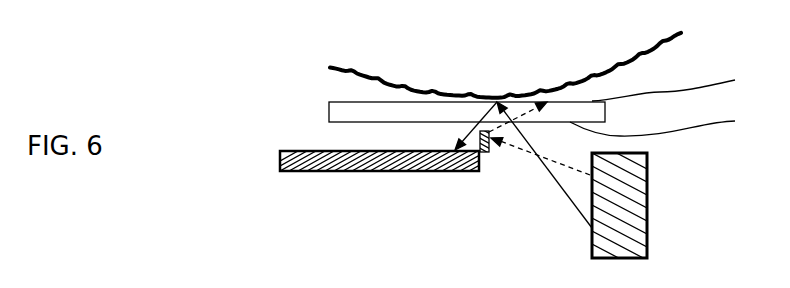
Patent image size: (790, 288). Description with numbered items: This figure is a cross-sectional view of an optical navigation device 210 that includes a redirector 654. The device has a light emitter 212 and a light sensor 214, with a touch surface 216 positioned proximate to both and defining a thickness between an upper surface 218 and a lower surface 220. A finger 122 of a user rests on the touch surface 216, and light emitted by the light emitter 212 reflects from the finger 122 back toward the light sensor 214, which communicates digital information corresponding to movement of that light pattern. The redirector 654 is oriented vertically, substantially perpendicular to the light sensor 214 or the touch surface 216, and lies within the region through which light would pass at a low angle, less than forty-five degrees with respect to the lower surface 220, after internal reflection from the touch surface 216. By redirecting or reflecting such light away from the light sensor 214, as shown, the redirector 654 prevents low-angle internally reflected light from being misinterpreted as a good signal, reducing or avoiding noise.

The finger 122 is at (516, 62).
The optical navigation device 210 is at (315, 228).
The light emitter 212 is at (628, 209).
The light sensor 214 is at (393, 171).
The touch surface 216 is at (320, 107).
The upper surface 218 is at (688, 79).
The lower surface 220 is at (677, 123).
The redirector 654 is at (496, 163).